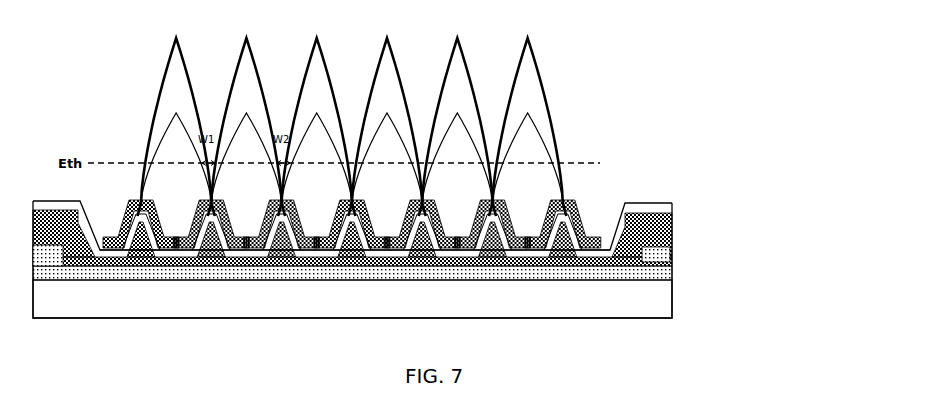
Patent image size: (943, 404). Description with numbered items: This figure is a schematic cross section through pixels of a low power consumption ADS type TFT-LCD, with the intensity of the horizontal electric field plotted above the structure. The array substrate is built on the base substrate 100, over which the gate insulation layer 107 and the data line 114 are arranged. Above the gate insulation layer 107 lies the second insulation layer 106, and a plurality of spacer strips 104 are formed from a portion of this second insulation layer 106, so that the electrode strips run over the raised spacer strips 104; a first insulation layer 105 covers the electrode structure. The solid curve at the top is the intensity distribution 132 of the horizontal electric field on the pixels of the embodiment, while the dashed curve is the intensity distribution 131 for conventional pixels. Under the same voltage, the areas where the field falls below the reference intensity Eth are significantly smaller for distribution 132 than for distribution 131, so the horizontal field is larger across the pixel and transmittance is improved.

The base substrate of the array substrate 100 is at (643, 297).
The gate insulation layer 107 is at (672, 276).
The data line 114 is at (672, 259).
The first insulation layer 105 is at (662, 209).
The second insulation layer 106 is at (672, 238).
The spacer strip 104 is at (563, 250).
The intensity distribution of horizontal electric field in a conventional display pa 131 is at (538, 110).
The intensity distribution of horizontal electric field of a display panel in the em 132 is at (533, 42).